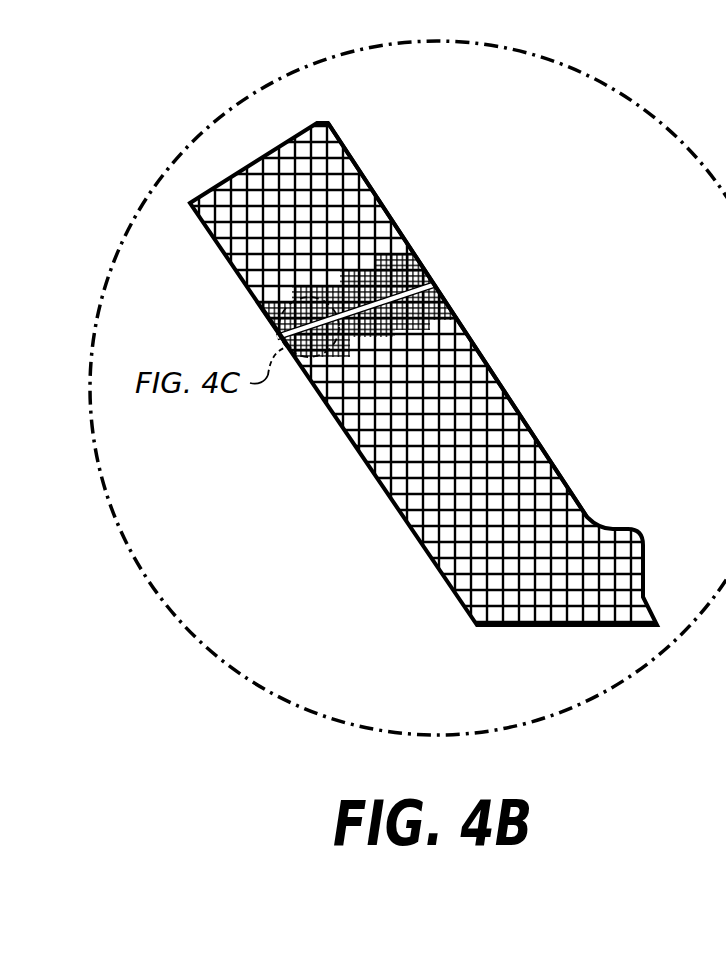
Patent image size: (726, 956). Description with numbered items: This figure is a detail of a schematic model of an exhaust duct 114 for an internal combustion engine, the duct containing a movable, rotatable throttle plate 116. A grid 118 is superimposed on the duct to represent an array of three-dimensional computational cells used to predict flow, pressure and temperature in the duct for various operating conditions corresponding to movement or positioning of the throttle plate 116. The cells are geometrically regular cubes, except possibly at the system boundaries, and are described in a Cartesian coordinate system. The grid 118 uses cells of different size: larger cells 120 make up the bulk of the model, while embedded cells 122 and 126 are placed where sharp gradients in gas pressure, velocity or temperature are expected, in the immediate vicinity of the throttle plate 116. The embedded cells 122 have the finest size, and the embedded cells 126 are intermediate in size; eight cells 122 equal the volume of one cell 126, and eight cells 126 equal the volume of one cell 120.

The exhaust duct 114 is at (402, 513).
The throttle plate 116 is at (433, 284).
The superimposed grid 118 is at (516, 397).
The larger cells 120 is at (362, 409).
The embedded grid cells 122 is at (276, 334).
The embedded grid cells 126 is at (336, 277).